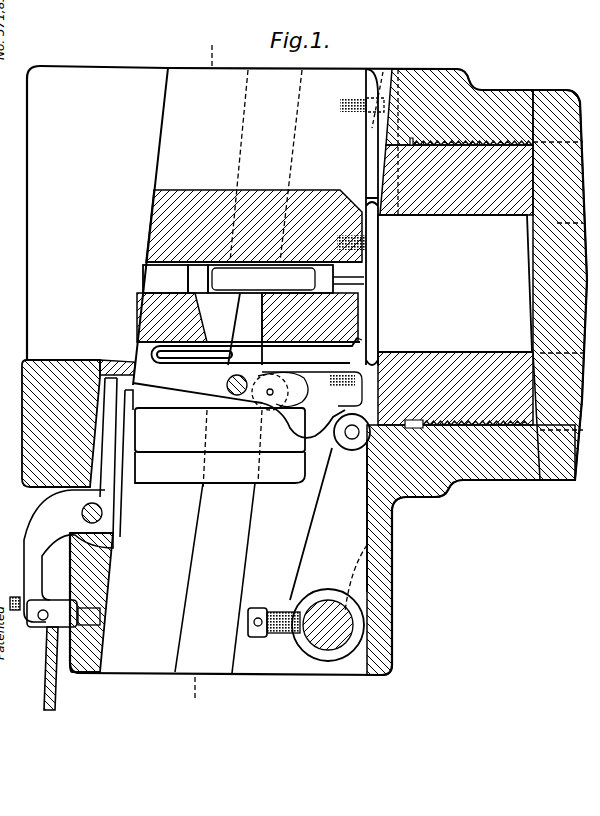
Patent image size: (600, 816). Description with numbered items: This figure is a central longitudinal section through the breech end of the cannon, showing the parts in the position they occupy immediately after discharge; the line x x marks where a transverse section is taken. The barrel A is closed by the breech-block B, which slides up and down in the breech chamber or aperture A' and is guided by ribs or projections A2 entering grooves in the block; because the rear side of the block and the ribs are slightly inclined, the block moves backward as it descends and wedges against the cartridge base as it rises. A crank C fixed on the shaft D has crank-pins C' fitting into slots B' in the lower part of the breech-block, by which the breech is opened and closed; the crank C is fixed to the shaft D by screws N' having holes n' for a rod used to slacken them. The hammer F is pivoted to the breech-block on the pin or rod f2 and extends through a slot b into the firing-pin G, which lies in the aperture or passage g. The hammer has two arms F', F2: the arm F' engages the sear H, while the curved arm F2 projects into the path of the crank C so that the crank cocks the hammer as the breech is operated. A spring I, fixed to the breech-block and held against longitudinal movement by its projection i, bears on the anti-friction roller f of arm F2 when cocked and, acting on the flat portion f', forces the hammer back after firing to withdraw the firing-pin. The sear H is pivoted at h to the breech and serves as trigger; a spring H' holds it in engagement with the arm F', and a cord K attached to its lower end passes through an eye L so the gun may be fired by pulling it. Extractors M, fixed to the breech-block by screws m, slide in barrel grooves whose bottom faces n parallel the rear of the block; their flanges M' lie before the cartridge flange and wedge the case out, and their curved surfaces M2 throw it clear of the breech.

The barrel A is at (477, 372).
The breech chamber or aperture A' is at (112, 602).
The ribs or projections A2 is at (229, 578).
The breech-block B is at (254, 226).
The slots B' is at (220, 445).
The slot b is at (183, 317).
The crank C is at (328, 526).
The crank-pins C' is at (352, 432).
The shaft D is at (328, 625).
The hammer F is at (293, 329).
The arm of the hammer F' is at (239, 408).
The arm of the hammer F2 is at (331, 390).
The anti-friction roller f is at (280, 391).
The flat portion f' is at (281, 375).
The pin or rod f2 is at (237, 377).
The firing-pin G is at (286, 279).
The aperture or passage g is at (165, 279).
The sear H is at (119, 457).
The spring H' is at (63, 423).
The pivot of the sear h is at (68, 556).
The spring I is at (150, 347).
The projection i is at (362, 343).
The cord K is at (45, 668).
The eye L is at (55, 602).
The extractors M is at (350, 217).
The flange or projection M' is at (354, 118).
The inclined or curved surfaces M2 is at (375, 86).
The screws m is at (405, 133).
The bottom faces of the grooves n is at (384, 244).
The holes n' is at (264, 606).
The screws N' is at (274, 634).
The section line x is at (244, 372).